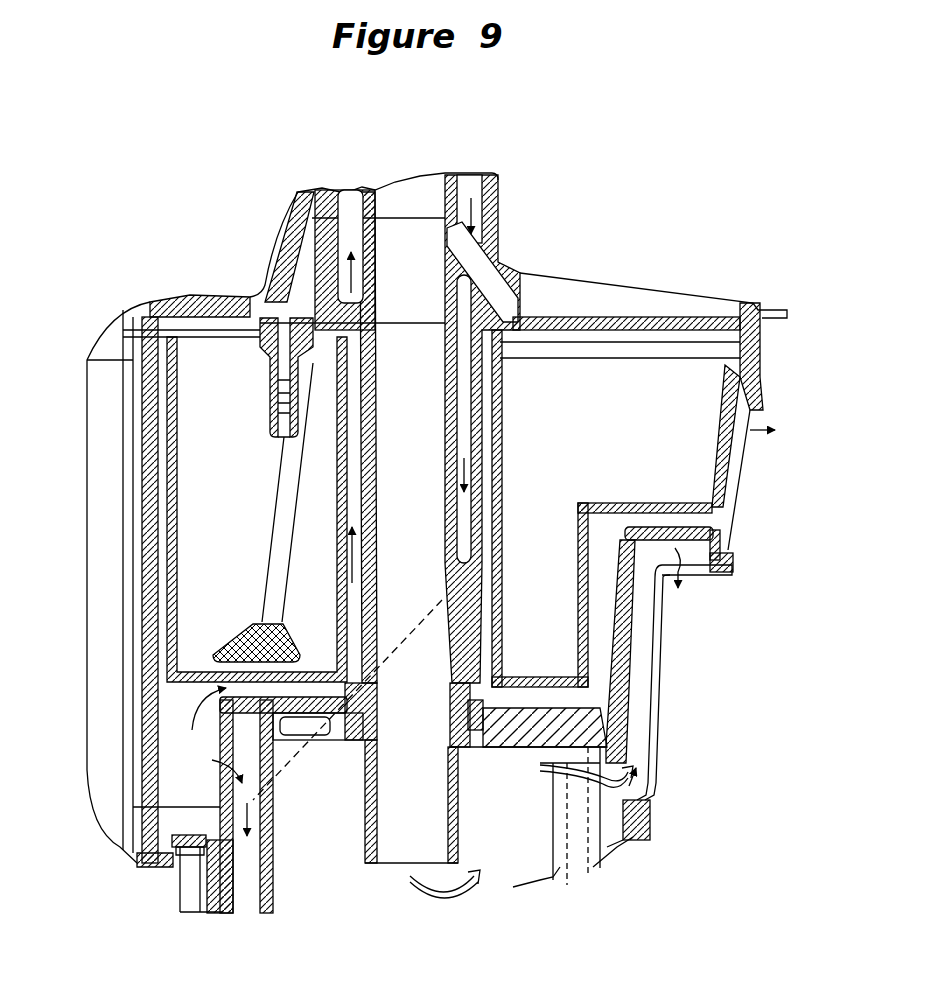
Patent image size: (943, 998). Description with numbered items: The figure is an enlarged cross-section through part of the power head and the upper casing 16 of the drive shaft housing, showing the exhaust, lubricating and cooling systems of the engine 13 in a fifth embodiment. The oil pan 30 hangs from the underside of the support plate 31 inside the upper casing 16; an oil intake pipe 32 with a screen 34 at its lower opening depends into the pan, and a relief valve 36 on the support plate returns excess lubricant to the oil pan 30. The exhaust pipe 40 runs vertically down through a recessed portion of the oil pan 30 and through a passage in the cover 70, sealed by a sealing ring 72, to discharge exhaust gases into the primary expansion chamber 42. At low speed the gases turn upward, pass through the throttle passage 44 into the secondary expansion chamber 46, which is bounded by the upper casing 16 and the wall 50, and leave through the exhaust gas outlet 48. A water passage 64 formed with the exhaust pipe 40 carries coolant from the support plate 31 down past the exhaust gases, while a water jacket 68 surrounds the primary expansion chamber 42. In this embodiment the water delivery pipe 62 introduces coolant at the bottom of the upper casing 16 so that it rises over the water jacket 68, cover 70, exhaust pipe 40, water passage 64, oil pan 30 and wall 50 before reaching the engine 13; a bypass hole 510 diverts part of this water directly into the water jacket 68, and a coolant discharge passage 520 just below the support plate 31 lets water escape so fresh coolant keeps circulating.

The engine 13 is at (495, 188).
The support plate 31 is at (508, 273).
The oil pan 30 is at (155, 432).
The relief valve 36 is at (283, 387).
The oil intake pipe 32 is at (287, 492).
The screen 34 is at (246, 633).
The water passage 64 is at (462, 556).
The wall 50 is at (637, 620).
The coolant discharge passage 520 is at (748, 437).
The exhaust gas outlet 48 is at (697, 578).
The secondary expansion chamber 46 is at (645, 670).
The cover 70 is at (600, 737).
The bypass hole 510 is at (222, 806).
The water delivery pipe 62 is at (180, 878).
The water jacket 68 is at (253, 867).
The sealing ring 72 is at (490, 722).
The throttle passage 44 is at (573, 778).
The exhaust pipe 40 is at (458, 822).
The primary expansion chamber 42 is at (442, 945).
The upper casing 16 is at (640, 832).